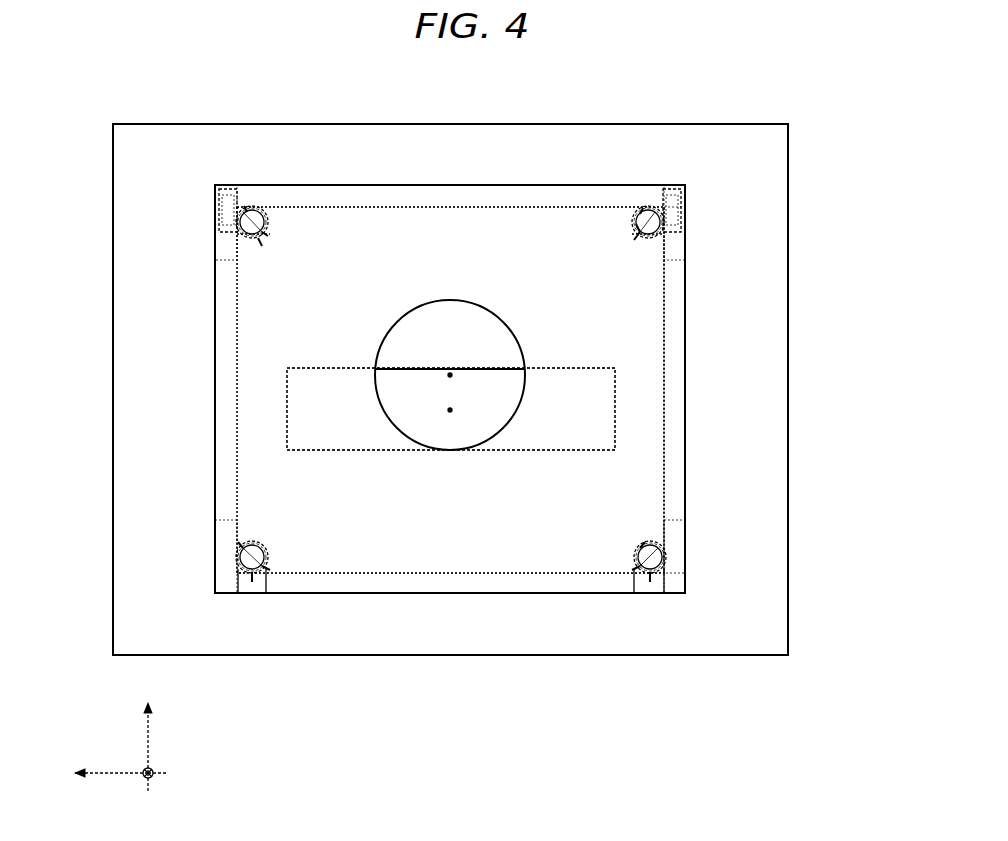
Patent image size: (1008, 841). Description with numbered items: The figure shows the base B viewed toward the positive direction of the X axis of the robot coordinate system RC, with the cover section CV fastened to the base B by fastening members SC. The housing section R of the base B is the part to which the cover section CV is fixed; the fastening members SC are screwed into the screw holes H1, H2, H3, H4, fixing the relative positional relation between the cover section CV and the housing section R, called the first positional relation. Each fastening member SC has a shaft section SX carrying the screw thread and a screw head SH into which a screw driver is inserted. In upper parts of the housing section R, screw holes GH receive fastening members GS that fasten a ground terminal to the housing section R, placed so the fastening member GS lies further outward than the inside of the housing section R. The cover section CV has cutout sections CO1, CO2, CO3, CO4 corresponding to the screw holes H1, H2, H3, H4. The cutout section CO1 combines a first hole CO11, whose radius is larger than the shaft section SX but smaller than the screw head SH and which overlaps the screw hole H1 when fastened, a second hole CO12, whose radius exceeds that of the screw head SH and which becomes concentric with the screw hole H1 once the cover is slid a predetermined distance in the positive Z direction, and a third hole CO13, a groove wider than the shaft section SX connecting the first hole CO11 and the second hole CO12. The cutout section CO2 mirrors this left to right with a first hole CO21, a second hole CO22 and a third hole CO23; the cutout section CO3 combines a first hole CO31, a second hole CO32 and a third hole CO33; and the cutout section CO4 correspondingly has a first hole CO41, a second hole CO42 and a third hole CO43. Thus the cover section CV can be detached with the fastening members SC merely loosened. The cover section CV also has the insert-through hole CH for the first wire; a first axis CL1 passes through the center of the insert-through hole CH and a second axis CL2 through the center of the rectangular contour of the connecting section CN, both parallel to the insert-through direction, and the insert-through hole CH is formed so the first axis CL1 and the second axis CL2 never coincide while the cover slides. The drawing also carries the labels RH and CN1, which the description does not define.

The base B is at (788, 188).
The housing section R is at (686, 295).
The frame opening RH is at (268, 372).
The cover section CV is at (686, 430).
The screw hole H1 is at (660, 222).
The screw hole H2 is at (264, 222).
The screw hole H3 is at (265, 555).
The screw hole H4 is at (663, 555).
The shaft section SX is at (451, 389).
The fastening member GS is at (222, 190).
The screw hole GH is at (222, 200).
The screw head SH is at (240, 225).
The fastening member SC is at (655, 205).
The cutout section CO1 is at (675, 245).
The first hole CO11 is at (640, 212).
The second hole CO12 is at (643, 240).
The third hole CO13 is at (640, 235).
The cutout section CO2 is at (220, 245).
The first hole CO21 is at (247, 214).
The second hole CO22 is at (258, 238).
The third hole CO23 is at (262, 232).
The cutout section CO3 is at (247, 580).
The first hole CO31 is at (245, 548).
The second hole CO32 is at (258, 580).
The third hole CO33 is at (266, 567).
The cutout section CO4 is at (655, 580).
The first hole CO41 is at (640, 548).
The second hole CO42 is at (640, 580).
The third hole CO43 is at (636, 566).
The insert-through hole CH is at (450, 300).
The connecting section CN is at (615, 404).
The connector first region CN1 is at (618, 382).
The first axis CL1 is at (452, 375).
The second axis CL2 is at (452, 410).
The robot coordinate system RC is at (142, 768).